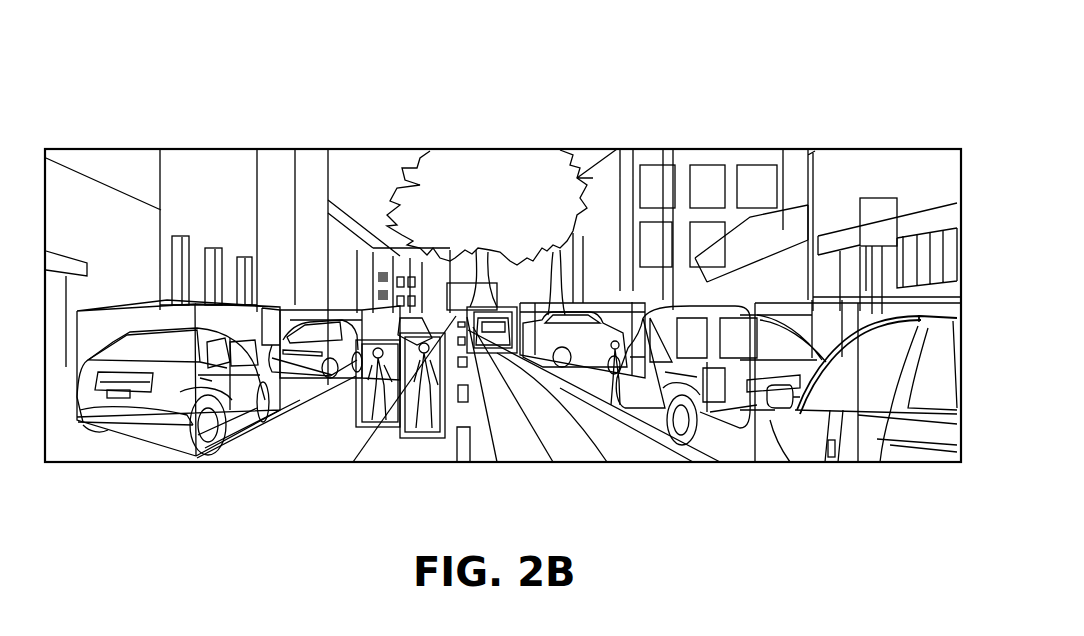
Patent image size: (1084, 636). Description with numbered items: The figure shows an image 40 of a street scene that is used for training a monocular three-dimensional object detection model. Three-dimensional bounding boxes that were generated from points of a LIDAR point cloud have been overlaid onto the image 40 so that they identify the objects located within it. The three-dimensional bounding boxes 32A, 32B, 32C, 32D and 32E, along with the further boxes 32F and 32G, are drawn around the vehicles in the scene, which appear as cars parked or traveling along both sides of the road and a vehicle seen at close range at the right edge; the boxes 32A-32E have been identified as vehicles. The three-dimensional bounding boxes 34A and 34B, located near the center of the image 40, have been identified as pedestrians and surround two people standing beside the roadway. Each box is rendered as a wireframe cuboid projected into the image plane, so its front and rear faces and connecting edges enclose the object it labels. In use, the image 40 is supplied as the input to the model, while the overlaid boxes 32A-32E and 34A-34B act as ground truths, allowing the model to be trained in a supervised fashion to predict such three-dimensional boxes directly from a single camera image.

The image 40 is at (773, 98).
The 3D bounding box 32A is at (752, 440).
The 3D bounding box 32B is at (585, 365).
The 3D bounding box 32C is at (518, 350).
The 3D bounding box 32D is at (474, 340).
The 3D bounding box 32E is at (118, 440).
The bounding box of vehicle 32F is at (325, 303).
The bounding box of object 32G is at (418, 280).
The 3D bounding box 34A is at (366, 430).
The 3D bounding box 34B is at (416, 440).